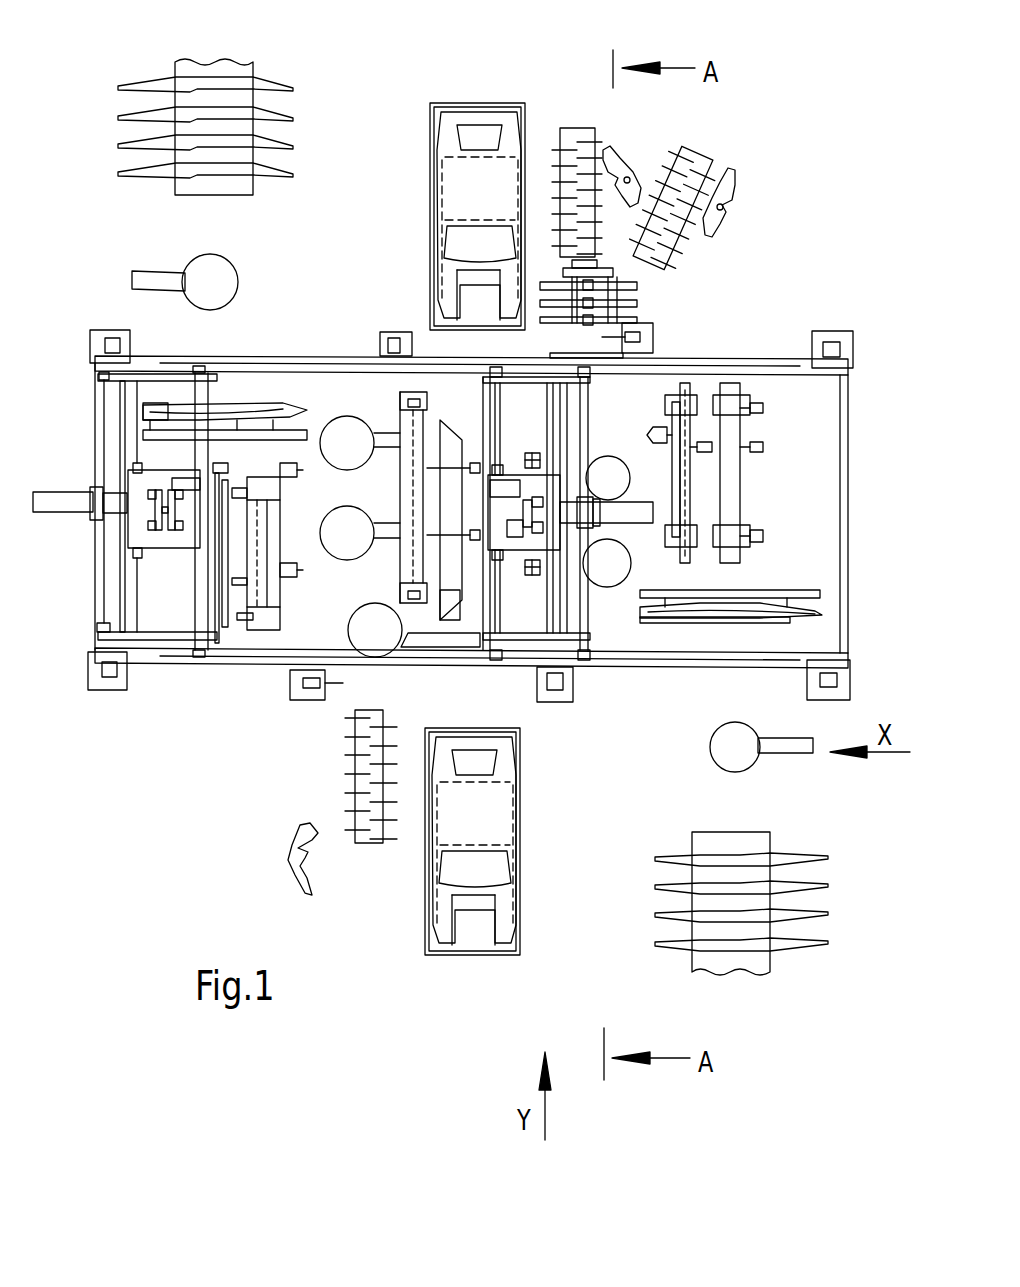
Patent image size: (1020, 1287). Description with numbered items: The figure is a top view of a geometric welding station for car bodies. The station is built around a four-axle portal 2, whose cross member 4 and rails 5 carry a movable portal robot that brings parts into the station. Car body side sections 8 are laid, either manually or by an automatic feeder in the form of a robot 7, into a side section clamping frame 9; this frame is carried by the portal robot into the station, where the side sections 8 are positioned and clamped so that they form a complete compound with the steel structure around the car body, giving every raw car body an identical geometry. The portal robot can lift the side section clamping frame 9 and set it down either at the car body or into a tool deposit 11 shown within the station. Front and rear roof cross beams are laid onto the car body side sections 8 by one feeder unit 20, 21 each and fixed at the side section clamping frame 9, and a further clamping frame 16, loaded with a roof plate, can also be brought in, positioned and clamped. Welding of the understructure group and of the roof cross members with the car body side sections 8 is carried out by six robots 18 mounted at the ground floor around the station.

The four-axle portal 2 is at (102, 666).
The cross member 4 is at (200, 560).
The rails 5 is at (287, 660).
The robot 7 is at (775, 748).
The car body side sections 8 is at (240, 78).
The side section clamping frame 9 is at (143, 443).
The tool deposit 11 is at (265, 632).
The clamping frame 16 is at (455, 447).
The robots 18 is at (368, 617).
The feeder unit 20 is at (370, 843).
The feeder unit 21 is at (583, 140).